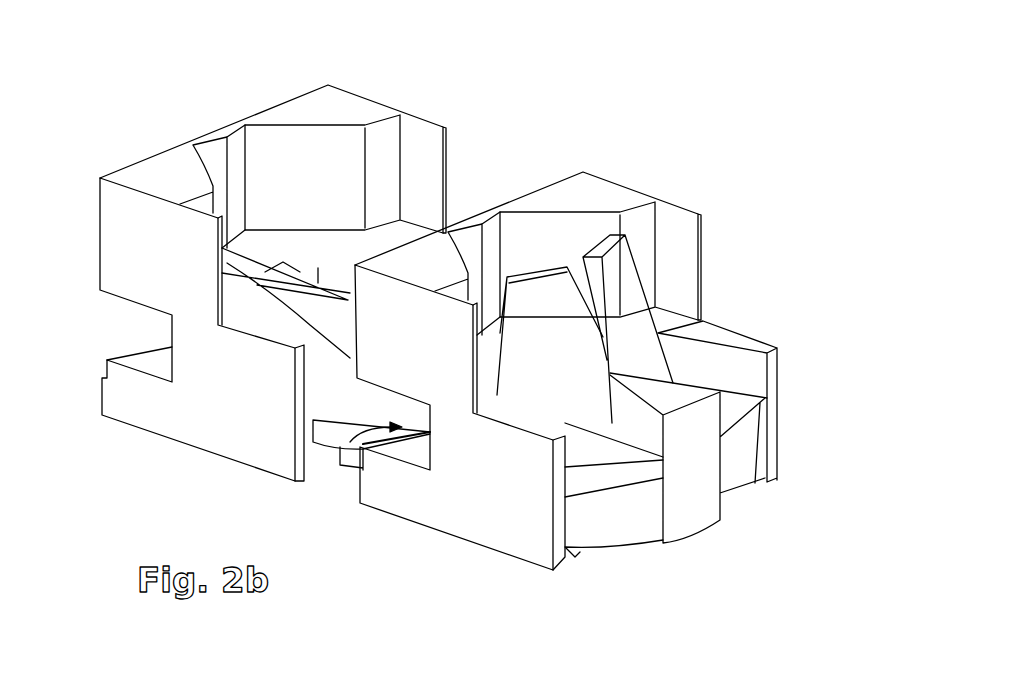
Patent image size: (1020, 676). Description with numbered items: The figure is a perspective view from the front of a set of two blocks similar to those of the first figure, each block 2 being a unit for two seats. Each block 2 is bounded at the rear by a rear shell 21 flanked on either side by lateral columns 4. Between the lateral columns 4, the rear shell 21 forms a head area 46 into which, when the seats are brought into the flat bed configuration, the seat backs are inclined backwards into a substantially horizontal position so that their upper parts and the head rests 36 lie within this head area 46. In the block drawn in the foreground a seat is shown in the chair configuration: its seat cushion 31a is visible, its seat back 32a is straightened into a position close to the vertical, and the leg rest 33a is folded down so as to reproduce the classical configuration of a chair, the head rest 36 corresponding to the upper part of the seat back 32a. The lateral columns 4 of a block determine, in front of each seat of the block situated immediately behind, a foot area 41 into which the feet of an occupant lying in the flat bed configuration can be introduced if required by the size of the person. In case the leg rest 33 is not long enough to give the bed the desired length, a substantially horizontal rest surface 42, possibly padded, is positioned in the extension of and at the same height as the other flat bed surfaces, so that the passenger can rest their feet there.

The block 2 is at (107, 432).
The lateral column 4 is at (387, 479).
The rear shell 21 is at (170, 432).
The seat cushion 31a is at (583, 457).
The seat back 32a is at (637, 320).
The leg rest 33 is at (350, 422).
The leg rest 33a is at (620, 520).
The head rest 36 is at (622, 257).
The foot area 41 is at (362, 448).
The rest surface 42 is at (415, 453).
The head area 46 is at (292, 157).